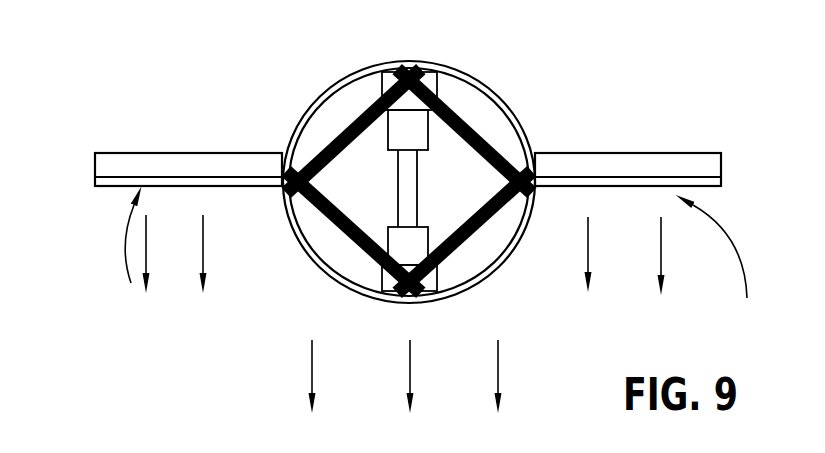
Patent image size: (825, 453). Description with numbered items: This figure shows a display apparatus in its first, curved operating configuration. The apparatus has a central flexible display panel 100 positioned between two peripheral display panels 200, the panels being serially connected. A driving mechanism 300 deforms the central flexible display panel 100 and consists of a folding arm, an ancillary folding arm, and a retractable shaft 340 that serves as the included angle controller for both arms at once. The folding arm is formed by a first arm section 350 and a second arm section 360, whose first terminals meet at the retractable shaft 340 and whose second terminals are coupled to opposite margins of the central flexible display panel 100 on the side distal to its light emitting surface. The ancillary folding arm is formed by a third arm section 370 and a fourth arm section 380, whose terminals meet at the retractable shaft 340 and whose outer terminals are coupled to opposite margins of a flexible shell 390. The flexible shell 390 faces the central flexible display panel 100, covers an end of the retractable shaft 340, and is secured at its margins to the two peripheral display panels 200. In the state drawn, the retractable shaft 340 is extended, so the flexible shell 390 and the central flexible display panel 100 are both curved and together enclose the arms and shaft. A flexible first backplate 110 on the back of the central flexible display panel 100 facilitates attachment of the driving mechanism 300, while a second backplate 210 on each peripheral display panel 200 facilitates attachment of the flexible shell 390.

The central flexible display panel 100 is at (490, 284).
The first backplate 110 is at (523, 236).
The peripheral display panel 200 is at (442, 299).
The second backplate 210 is at (173, 167).
The driving mechanism 300 is at (523, 119).
The retractable shaft 340 is at (417, 170).
The first arm section 350 is at (453, 108).
The second arm section 360 is at (347, 130).
The third arm section 370 is at (330, 218).
The fourth arm section 380 is at (470, 237).
The flexible shell 390 is at (368, 76).